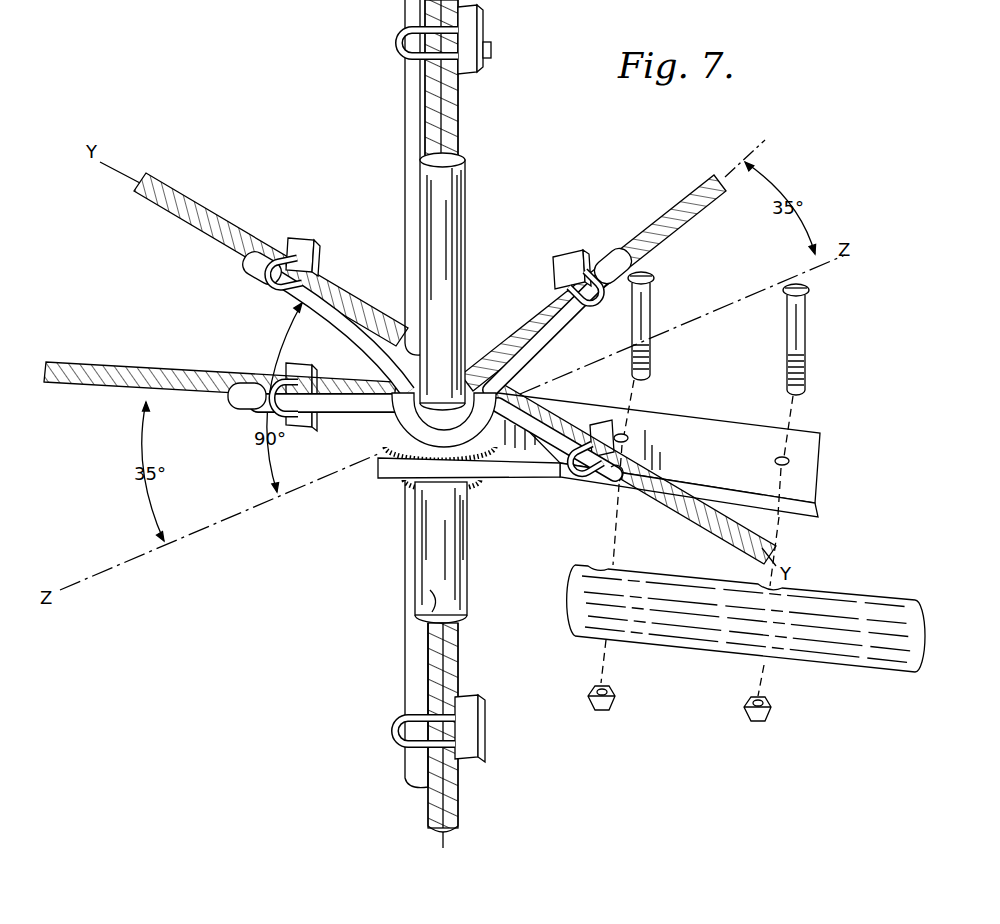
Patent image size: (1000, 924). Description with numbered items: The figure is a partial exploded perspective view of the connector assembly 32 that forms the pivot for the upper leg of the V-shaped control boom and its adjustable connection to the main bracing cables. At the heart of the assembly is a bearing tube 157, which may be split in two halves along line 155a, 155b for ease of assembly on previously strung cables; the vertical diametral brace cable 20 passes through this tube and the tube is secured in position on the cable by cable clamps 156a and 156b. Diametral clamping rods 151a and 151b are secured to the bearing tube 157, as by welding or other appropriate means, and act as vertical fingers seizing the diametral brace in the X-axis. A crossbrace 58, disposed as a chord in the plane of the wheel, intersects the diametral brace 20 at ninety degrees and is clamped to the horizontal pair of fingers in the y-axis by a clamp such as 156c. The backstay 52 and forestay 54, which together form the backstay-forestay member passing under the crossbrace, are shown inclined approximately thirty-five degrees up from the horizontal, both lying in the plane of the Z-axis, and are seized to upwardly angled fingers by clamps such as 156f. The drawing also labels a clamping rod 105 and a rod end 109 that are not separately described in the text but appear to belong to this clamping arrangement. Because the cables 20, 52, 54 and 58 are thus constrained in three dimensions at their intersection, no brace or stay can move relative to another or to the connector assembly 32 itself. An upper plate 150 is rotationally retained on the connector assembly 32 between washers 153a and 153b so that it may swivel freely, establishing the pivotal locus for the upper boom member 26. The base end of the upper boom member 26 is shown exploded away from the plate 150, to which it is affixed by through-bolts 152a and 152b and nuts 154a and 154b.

The diametral brace cable 20 is at (473, 127).
The upper boom member 26 is at (875, 606).
The connector assembly 32 is at (372, 626).
The backstay 52 is at (80, 367).
The forestay 54 is at (697, 192).
The crossbrace 58 is at (217, 203).
The preformed grip rods 105 is at (250, 382).
The grip rod end 109 is at (602, 482).
The upper plate 150 is at (815, 465).
The diametral clamping rod 151a is at (410, 560).
The diametral clamping rod 151b is at (406, 107).
The bolt 152a is at (802, 341).
The bolt 152b is at (645, 366).
The washer 153a is at (470, 485).
The washer 153b is at (390, 428).
The nut 154a is at (605, 712).
The nut 154b is at (757, 722).
The split line 155a is at (455, 238).
The split line 155b is at (432, 592).
The cable clamp 156a is at (485, 750).
The cable clamp 156b is at (481, 25).
The cable clamp 156c is at (308, 246).
The cable clamp 156f is at (592, 262).
The bearing tube 157 is at (464, 587).